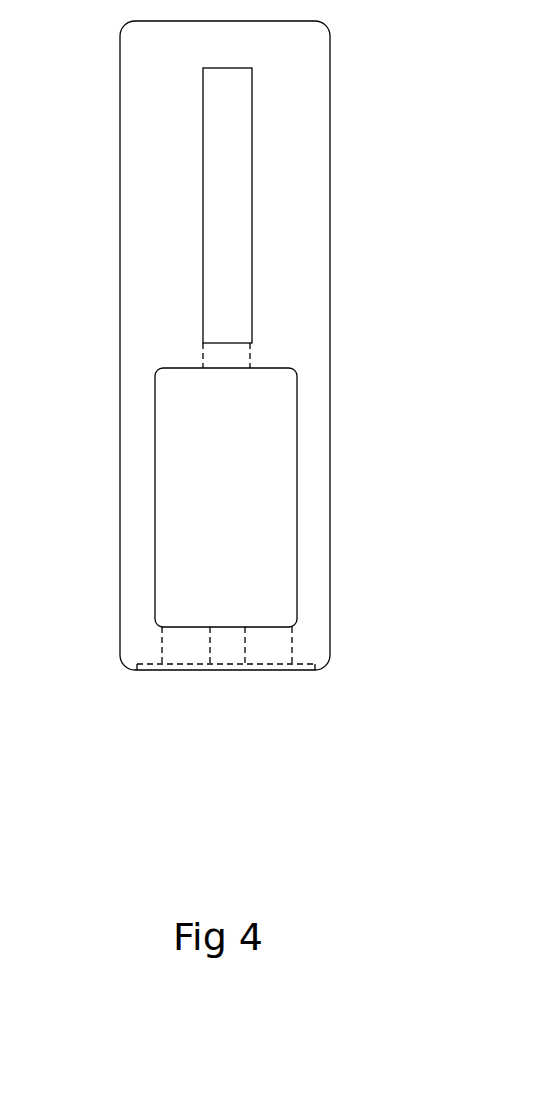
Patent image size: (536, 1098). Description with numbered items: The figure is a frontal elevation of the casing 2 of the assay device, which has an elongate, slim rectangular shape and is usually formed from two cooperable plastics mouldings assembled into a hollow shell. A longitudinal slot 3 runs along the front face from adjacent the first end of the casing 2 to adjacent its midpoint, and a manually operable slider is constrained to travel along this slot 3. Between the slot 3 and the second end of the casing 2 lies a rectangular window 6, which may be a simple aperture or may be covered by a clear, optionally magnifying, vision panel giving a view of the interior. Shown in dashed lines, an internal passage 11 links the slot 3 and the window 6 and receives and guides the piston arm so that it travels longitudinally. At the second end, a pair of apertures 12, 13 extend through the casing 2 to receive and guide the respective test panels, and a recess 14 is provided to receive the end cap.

The casing 2 is at (297, 198).
The longitudinal slot 3 is at (226, 137).
The rectangular window 6 is at (214, 473).
The internal passage 11 is at (233, 359).
The aperture 12 is at (270, 652).
The aperture 13 is at (186, 645).
The recess 14 is at (225, 669).